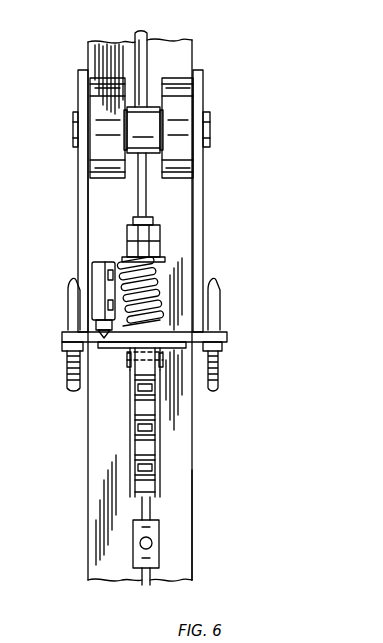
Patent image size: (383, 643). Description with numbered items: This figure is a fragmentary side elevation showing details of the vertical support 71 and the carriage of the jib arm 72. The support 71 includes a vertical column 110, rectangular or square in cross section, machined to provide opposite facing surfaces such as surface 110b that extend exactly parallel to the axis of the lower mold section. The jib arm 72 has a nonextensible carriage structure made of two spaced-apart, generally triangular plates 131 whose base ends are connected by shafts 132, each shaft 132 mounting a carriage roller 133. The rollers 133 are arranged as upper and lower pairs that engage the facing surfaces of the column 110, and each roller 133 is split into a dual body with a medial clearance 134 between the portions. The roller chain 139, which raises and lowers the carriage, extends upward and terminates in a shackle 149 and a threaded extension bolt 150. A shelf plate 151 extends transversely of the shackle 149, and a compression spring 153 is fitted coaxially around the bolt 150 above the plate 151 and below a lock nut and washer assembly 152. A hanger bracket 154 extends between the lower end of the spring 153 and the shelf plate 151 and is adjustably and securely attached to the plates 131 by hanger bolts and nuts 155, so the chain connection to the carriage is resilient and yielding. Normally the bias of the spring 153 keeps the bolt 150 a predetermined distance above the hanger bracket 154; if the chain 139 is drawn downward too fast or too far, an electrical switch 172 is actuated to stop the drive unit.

The support 71 is at (174, 262).
The jib arm 72 is at (205, 96).
The vertical column 110 is at (110, 455).
The facing surface 110b is at (185, 526).
The plates 131 is at (80, 198).
The shafts 132 is at (210, 128).
The carriage roller 133 is at (183, 138).
The medial clearance 134 is at (150, 110).
The roller chain 139 is at (150, 448).
The shackle 149 is at (147, 350).
The threaded extension bolt 150 is at (160, 292).
The shelf plate 151 is at (125, 348).
The lock nut and washer assembly 152 is at (160, 240).
The compression spring 153 is at (160, 312).
The hanger bracket 154 is at (228, 337).
The hanger bolts and nuts 155 is at (70, 355).
The electrical switch 172 is at (110, 288).